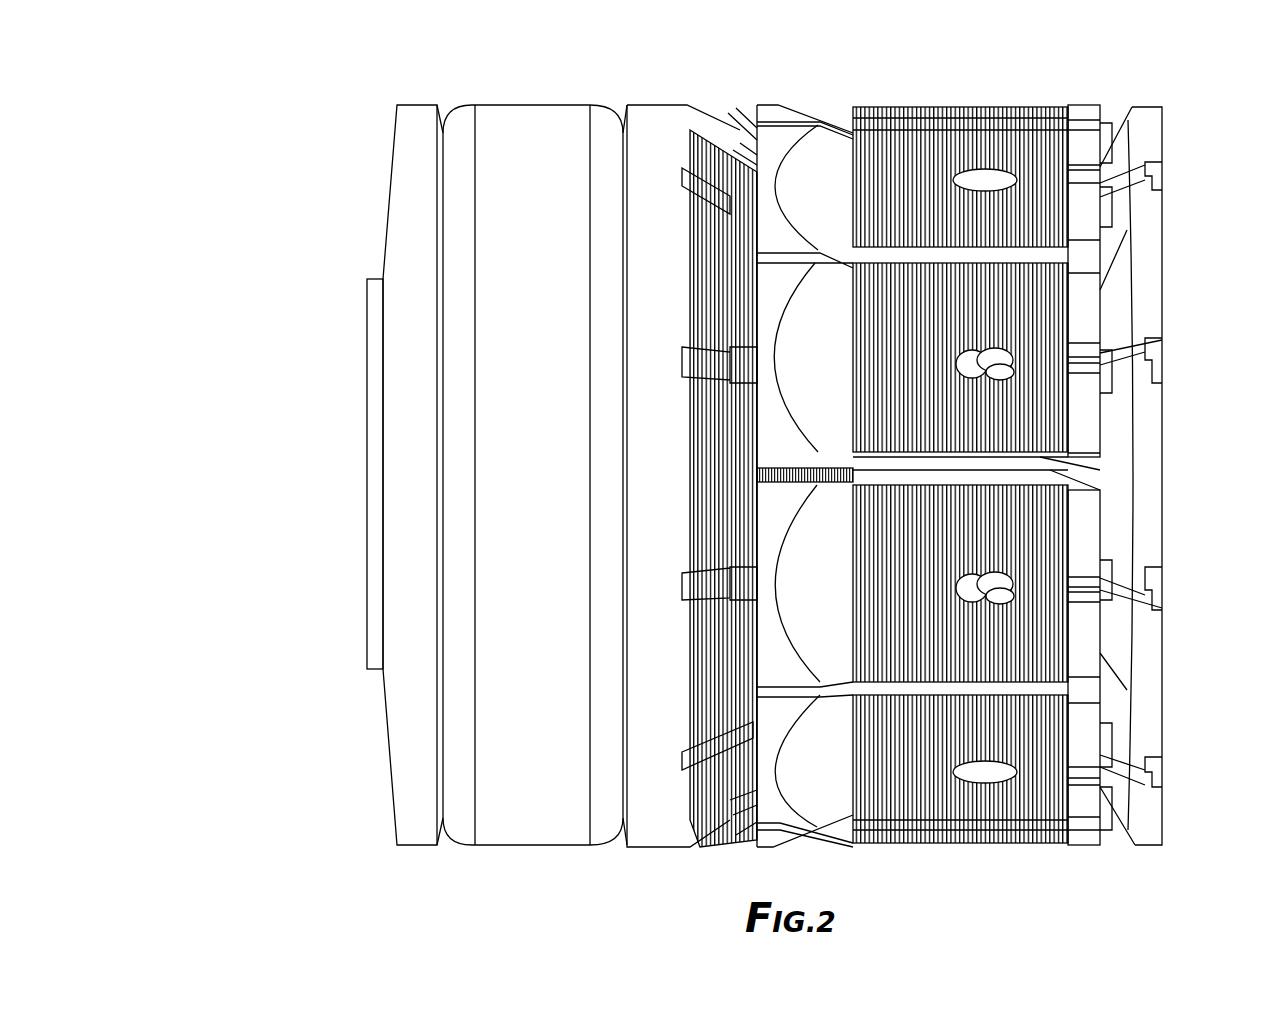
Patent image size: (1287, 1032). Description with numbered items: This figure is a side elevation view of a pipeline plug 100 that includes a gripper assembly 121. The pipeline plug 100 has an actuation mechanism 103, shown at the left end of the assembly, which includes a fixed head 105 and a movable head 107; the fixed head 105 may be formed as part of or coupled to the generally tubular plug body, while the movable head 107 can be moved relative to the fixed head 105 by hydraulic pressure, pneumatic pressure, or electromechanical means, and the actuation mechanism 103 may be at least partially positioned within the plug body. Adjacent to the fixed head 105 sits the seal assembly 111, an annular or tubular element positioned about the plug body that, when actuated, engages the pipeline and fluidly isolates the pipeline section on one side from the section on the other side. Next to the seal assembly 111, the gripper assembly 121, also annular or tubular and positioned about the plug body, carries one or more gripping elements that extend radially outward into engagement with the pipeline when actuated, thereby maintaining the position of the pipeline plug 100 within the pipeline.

The pipeline plug 100 is at (225, 122).
The actuation mechanism 103 is at (367, 568).
The fixed head 105 is at (413, 117).
The movable head 107 is at (1193, 472).
The seal assembly 111 is at (620, 92).
The gripper assembly 121 is at (957, 430).